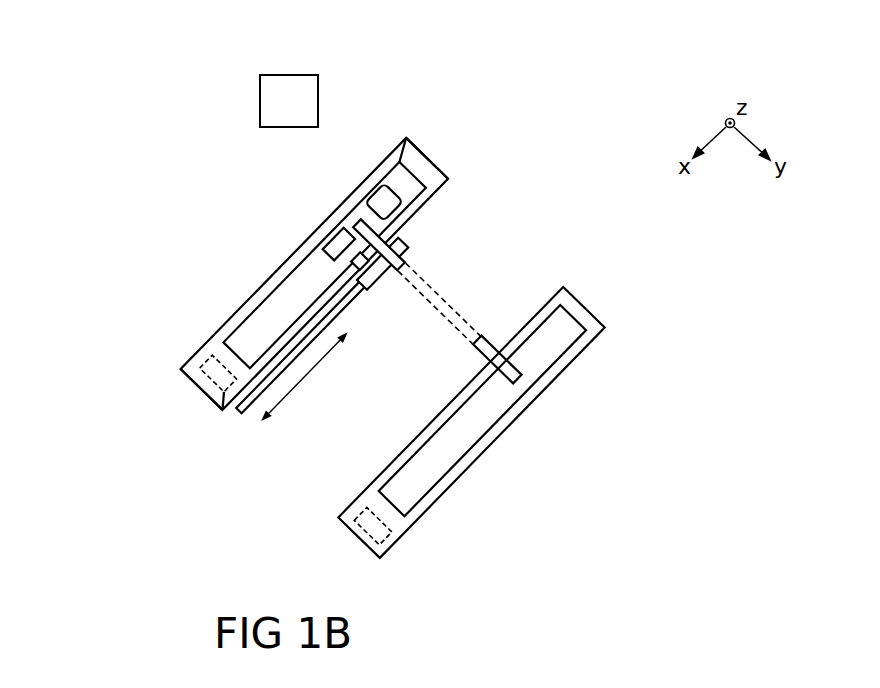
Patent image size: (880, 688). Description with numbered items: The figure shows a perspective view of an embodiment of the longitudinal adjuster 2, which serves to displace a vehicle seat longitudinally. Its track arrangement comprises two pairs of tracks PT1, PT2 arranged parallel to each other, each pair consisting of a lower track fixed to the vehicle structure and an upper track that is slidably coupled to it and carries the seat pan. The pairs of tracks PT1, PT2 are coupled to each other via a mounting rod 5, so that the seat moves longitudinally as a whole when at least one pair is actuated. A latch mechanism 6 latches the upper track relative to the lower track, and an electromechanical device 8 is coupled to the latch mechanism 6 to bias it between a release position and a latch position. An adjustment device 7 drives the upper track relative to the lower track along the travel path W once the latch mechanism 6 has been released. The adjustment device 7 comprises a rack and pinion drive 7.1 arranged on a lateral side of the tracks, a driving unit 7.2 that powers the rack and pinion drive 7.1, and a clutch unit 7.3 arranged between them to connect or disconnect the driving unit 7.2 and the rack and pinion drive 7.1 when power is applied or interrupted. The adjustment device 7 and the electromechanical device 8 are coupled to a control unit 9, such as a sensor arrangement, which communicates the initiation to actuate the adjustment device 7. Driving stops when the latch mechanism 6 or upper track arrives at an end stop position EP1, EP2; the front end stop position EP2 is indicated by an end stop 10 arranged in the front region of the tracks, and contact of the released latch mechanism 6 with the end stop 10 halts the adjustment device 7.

The longitudinal adjuster 2 is at (140, 193).
The mounting rod 5 is at (448, 305).
The latch mechanism 6 is at (446, 190).
The adjustment device 7 is at (368, 305).
The rack and pinion drive 7.1 is at (419, 236).
The driving unit 7.2 is at (325, 243).
The clutch unit 7.3 is at (352, 263).
The electromechanical device 8 is at (401, 174).
The control unit 9 is at (337, 238).
The end stop 10 is at (194, 385).
The pair of tracks PT1 is at (588, 280).
The pair of tracks PT2 is at (440, 116).
The end stop position EP1 is at (364, 163).
The front end stop position EP2 is at (194, 395).
The travel path W is at (320, 392).